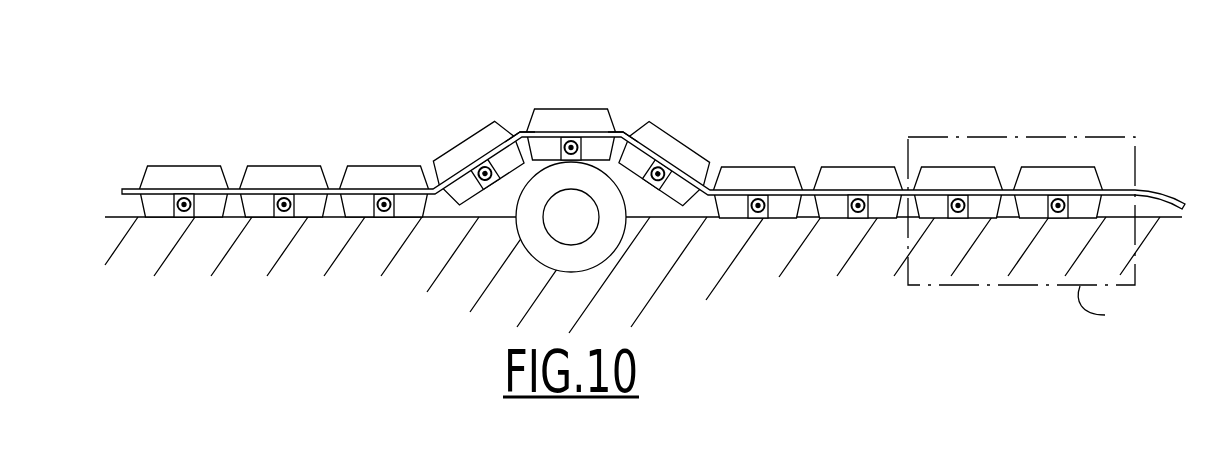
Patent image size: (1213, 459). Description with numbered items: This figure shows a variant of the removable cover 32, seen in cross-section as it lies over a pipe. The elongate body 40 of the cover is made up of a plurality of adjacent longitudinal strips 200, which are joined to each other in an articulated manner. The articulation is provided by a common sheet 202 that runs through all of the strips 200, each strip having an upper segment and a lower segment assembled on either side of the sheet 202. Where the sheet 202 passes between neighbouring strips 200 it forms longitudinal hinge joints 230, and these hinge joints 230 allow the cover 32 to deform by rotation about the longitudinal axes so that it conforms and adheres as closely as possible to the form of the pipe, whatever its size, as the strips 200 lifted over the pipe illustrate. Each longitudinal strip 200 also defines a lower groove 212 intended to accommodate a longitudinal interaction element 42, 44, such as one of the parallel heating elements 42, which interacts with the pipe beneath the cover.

The removable cover 32 is at (172, 140).
The longitudinal strip 200 is at (198, 167).
The longitudinal hinge joint 230 is at (517, 130).
The common sheet 202 is at (130, 205).
The lower groove 212 is at (184, 217).
The heating element 42 is at (858, 230).
The longitudinal interaction element 44 is at (643, 275).
The elongate body 40 is at (1078, 158).